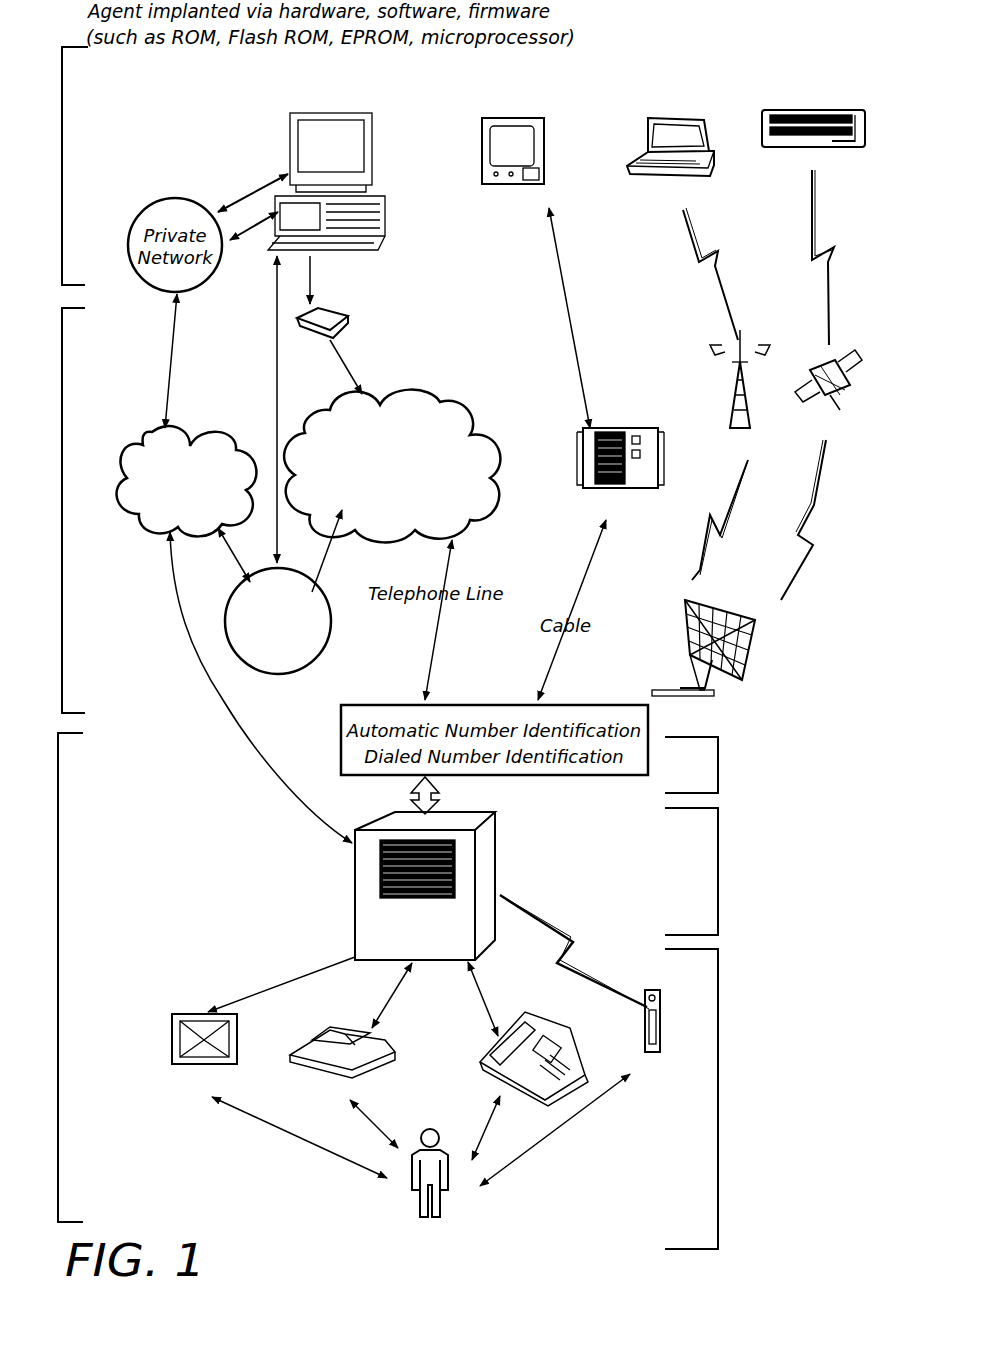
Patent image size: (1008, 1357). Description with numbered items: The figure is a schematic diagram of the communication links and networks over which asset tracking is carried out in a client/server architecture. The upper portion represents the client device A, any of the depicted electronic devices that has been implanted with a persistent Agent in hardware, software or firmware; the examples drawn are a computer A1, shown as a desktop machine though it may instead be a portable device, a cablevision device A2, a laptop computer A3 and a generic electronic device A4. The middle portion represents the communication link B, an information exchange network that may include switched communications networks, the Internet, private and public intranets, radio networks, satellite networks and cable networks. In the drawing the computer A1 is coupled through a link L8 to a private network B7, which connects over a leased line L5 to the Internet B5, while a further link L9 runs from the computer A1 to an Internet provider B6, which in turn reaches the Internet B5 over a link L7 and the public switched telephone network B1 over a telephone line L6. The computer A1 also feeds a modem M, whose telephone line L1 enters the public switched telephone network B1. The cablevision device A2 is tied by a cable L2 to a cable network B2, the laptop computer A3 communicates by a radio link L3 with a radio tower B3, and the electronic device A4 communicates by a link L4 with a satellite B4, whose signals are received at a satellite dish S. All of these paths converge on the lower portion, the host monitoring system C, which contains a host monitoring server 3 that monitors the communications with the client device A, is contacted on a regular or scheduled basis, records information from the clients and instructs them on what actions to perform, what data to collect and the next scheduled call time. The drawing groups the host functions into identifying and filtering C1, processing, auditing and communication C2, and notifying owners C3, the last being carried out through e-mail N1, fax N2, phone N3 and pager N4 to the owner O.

The client device A is at (168, 107).
The computer A1 is at (332, 112).
The cablevision device A2 is at (515, 117).
The laptop computer A3 is at (672, 116).
The electronic device A4 is at (815, 110).
The private network link L8 is at (252, 200).
The private network B7 is at (200, 287).
The leased line L5 is at (170, 326).
The direct link to internet provider L9 is at (276, 398).
The modem M is at (340, 312).
The telephone line L1 is at (345, 356).
The the Internet B5 is at (190, 440).
The public switched telephone network B1 is at (468, 522).
The telephone line L6 is at (338, 528).
The internet link L7 is at (230, 560).
The internet provider B6 is at (318, 653).
The cable L2 is at (556, 252).
The radio frequency link L3 is at (698, 264).
The satellite link L4 is at (818, 240).
The cable network B2 is at (648, 425).
The radio tower B3 is at (735, 420).
The satellite B4 is at (830, 345).
The satellite dish S is at (752, 672).
The communication link B is at (118, 668).
The host monitoring system C is at (108, 850).
The host monitoring server 3 is at (352, 892).
The identifying and filtering C1 is at (806, 726).
The processing, auditing and communication C2 is at (775, 935).
The notify owners C3 is at (750, 1148).
The e-mail N1 is at (172, 1040).
The fax N2 is at (385, 1068).
The phone N3 is at (512, 1022).
The pager N4 is at (660, 1000).
The owner O is at (450, 1212).